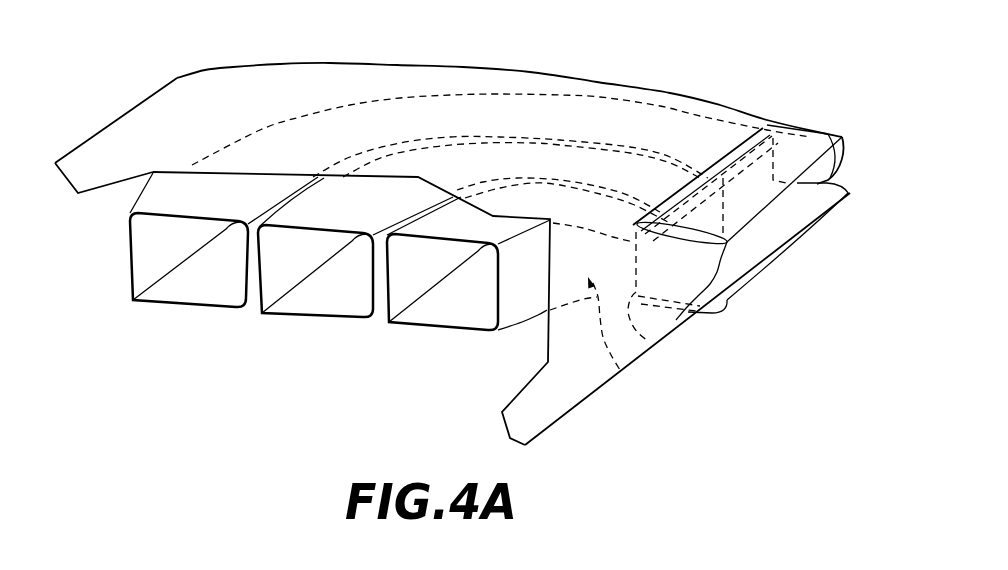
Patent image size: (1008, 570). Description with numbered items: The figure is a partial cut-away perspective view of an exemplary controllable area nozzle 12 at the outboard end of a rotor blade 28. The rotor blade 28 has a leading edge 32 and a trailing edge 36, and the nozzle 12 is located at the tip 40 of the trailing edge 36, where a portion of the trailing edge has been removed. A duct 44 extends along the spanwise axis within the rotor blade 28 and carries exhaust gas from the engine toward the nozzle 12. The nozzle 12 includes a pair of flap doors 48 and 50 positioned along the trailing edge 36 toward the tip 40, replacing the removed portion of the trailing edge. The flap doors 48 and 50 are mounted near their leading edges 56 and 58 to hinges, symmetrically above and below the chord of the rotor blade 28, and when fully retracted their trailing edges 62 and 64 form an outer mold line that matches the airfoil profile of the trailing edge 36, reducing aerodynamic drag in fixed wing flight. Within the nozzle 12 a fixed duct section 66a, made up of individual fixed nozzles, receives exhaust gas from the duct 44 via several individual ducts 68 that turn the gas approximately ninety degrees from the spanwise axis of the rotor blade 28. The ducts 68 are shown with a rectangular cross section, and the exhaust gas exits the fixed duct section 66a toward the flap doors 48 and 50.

The controllable area nozzle 12 is at (475, 233).
The rotor blade 28 is at (357, 338).
The leading edge 32 is at (104, 100).
The trailing edge 36 is at (607, 416).
The tip 40 is at (552, 53).
The duct 44 is at (231, 380).
The flap door 48 is at (731, 229).
The flap door 50 is at (811, 250).
The leading edge 56 is at (763, 128).
The leading edge 58 is at (647, 340).
The trailing edge 62 is at (842, 137).
The trailing edge 64 is at (840, 186).
The fixed duct section 66a is at (623, 370).
The individual ducts 68 is at (181, 295).